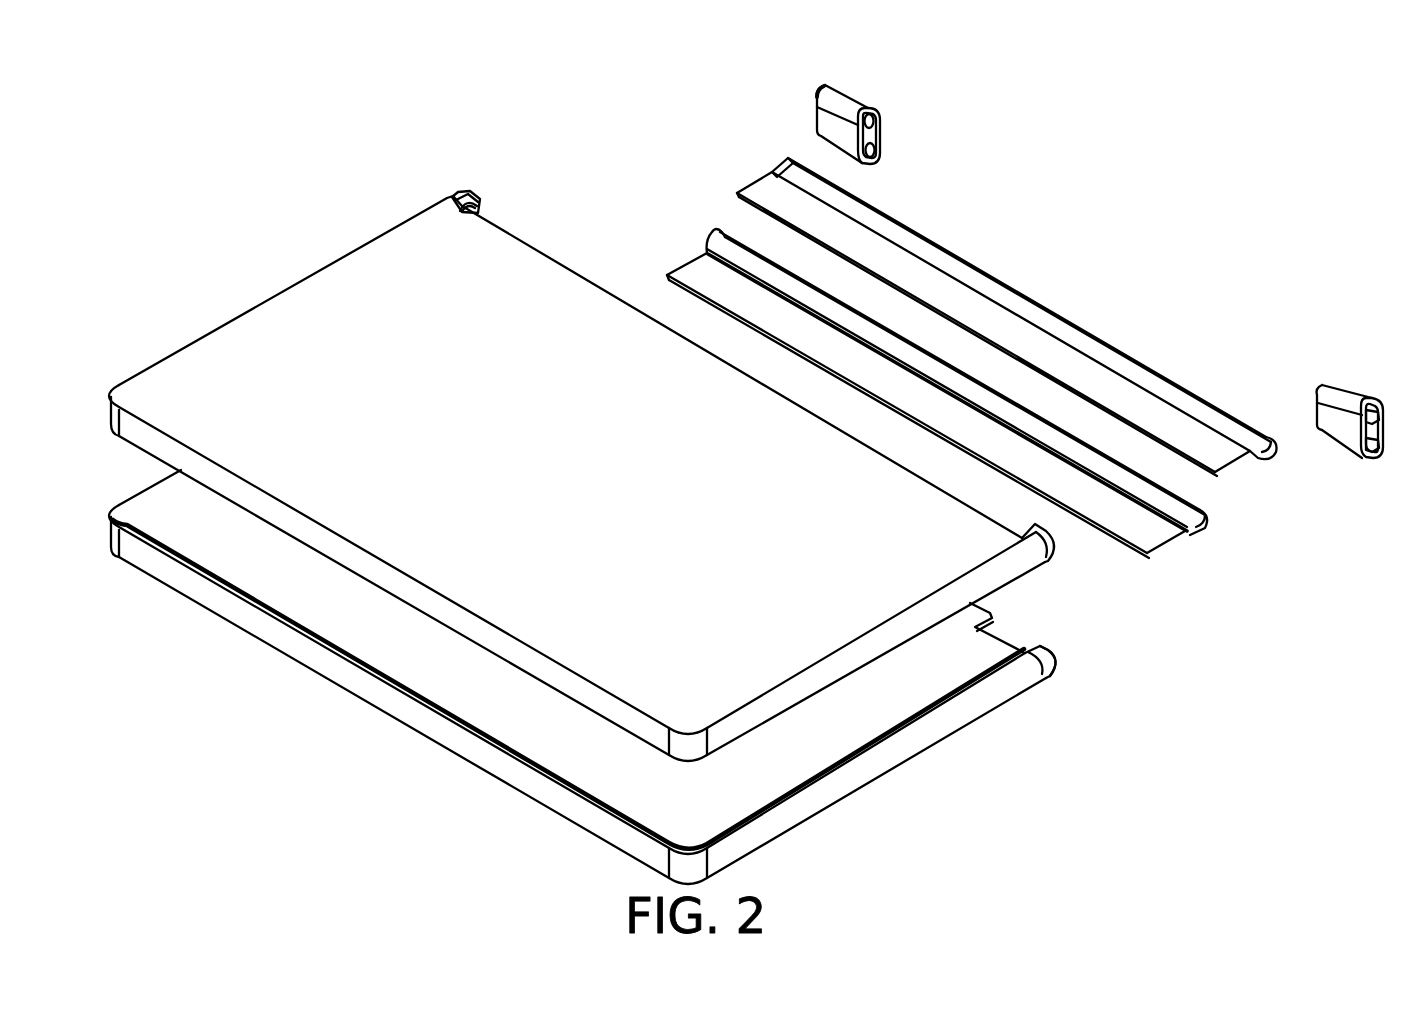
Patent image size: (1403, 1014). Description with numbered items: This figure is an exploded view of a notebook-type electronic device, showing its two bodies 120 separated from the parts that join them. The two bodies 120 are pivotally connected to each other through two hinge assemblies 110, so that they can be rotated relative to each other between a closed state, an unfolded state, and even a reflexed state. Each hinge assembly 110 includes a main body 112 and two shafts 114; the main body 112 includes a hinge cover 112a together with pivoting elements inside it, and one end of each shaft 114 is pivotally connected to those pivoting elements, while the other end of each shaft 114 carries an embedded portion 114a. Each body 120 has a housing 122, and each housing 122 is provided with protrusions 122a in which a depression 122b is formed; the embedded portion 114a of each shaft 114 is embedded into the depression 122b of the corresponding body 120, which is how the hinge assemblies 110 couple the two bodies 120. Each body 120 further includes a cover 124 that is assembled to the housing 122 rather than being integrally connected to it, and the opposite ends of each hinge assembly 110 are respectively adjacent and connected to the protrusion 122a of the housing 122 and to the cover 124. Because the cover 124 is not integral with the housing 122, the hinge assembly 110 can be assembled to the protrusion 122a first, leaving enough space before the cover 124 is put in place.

The hinge assembly 110 is at (1093, 277).
The main body 112 is at (1089, 240).
The hinge cover 112a is at (1332, 387).
The shaft 114 is at (1128, 323).
The embedded portion 114a is at (885, 97).
The body 120 is at (605, 499).
The housing 122 is at (882, 638).
The protrusion 122a is at (778, 405).
The depression 122b is at (480, 214).
The cover 124 is at (765, 188).